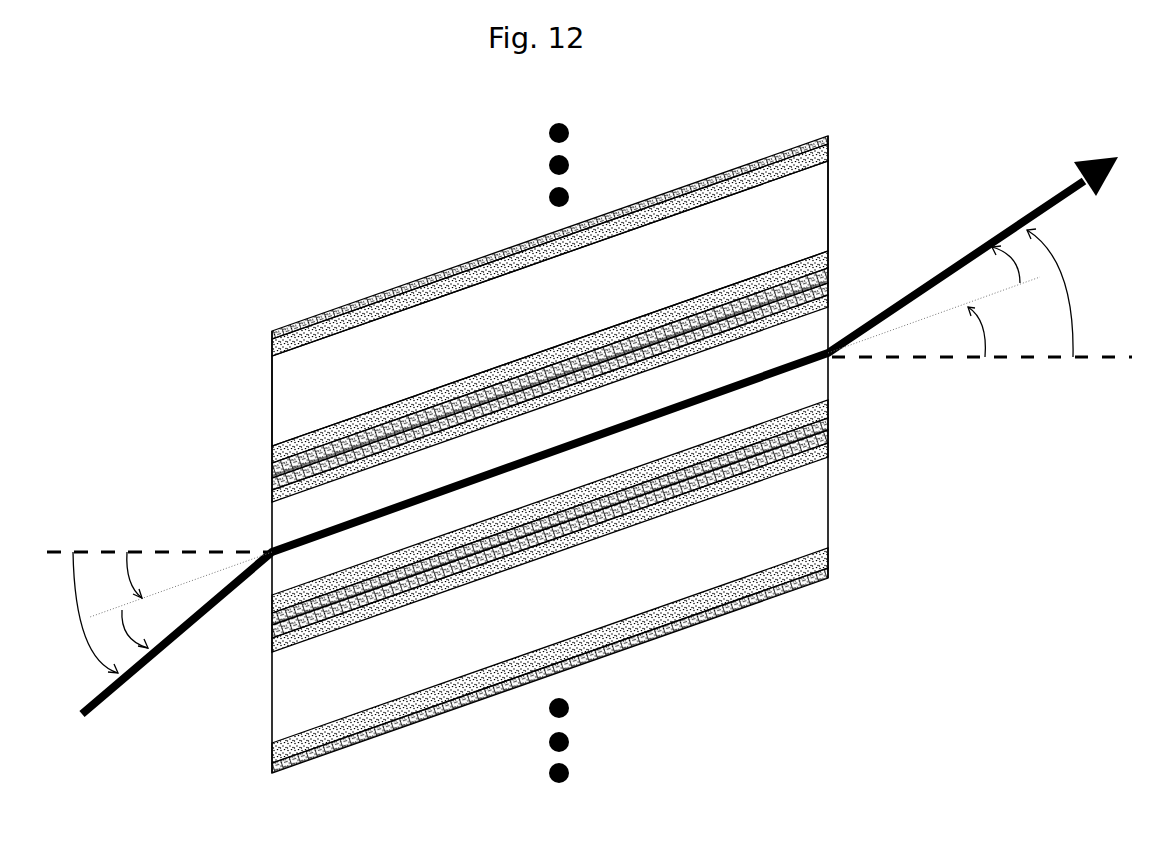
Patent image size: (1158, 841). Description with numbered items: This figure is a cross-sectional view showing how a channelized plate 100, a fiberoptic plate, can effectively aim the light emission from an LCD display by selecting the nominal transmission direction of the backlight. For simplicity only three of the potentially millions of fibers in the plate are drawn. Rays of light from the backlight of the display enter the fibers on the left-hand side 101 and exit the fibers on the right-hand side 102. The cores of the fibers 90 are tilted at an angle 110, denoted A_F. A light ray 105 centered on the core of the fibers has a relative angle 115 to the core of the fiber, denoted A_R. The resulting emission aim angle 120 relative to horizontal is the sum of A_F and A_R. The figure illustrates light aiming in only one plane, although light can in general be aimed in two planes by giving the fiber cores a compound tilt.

The channelized plate 100 is at (305, 225).
The cores of the fibers 90 is at (489, 326).
The left-hand side 101 is at (268, 390).
The right-hand side 102 is at (833, 204).
The light ray 105 is at (592, 453).
The angle 110 is at (556, 452).
The relative angle 115 is at (571, 447).
The emission aim angle 120 is at (575, 451).